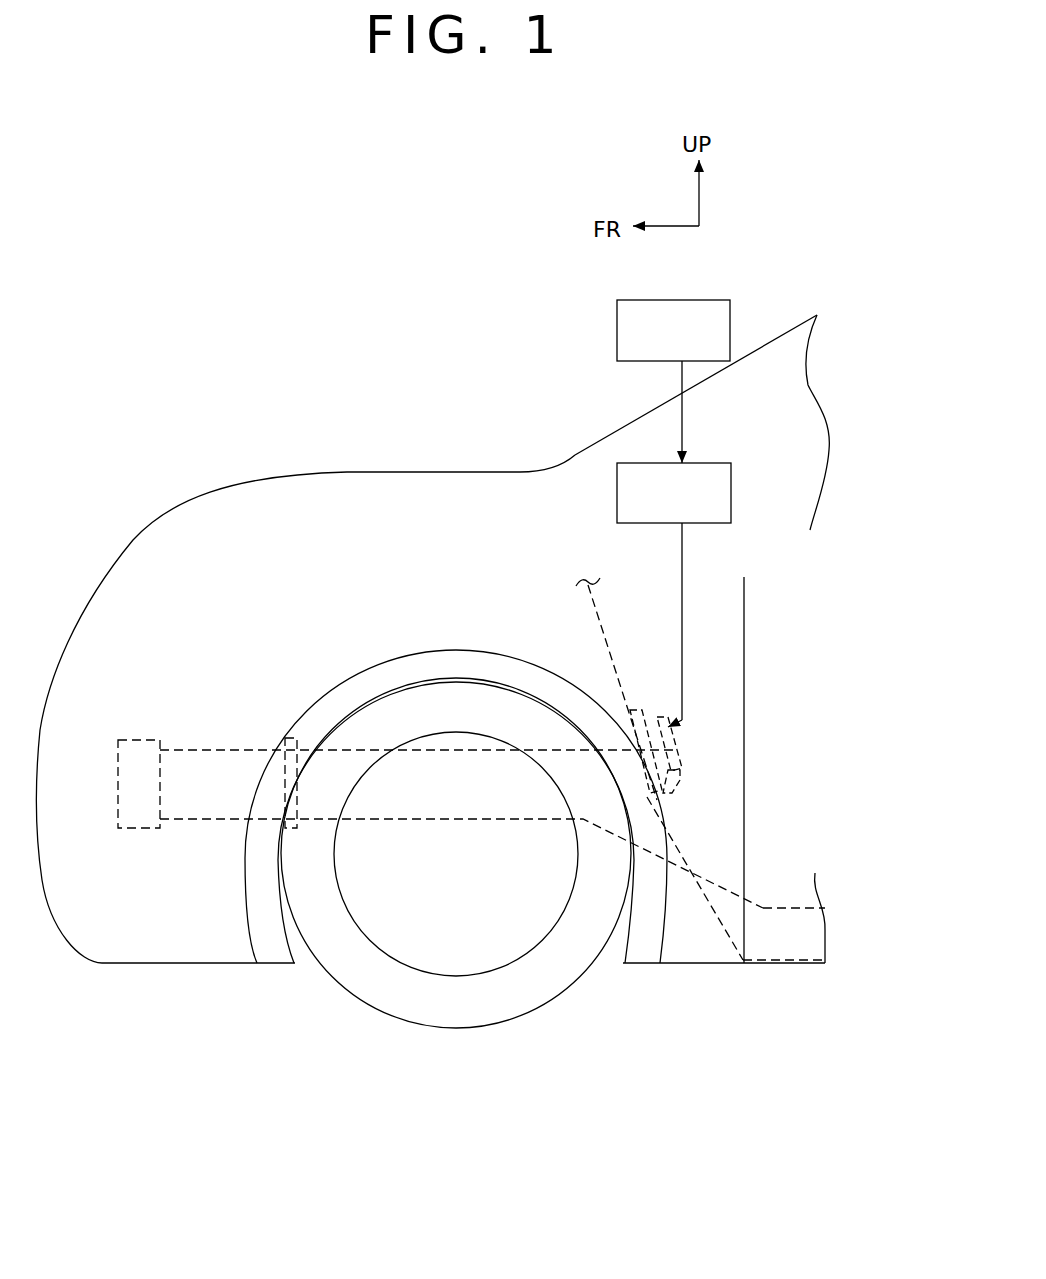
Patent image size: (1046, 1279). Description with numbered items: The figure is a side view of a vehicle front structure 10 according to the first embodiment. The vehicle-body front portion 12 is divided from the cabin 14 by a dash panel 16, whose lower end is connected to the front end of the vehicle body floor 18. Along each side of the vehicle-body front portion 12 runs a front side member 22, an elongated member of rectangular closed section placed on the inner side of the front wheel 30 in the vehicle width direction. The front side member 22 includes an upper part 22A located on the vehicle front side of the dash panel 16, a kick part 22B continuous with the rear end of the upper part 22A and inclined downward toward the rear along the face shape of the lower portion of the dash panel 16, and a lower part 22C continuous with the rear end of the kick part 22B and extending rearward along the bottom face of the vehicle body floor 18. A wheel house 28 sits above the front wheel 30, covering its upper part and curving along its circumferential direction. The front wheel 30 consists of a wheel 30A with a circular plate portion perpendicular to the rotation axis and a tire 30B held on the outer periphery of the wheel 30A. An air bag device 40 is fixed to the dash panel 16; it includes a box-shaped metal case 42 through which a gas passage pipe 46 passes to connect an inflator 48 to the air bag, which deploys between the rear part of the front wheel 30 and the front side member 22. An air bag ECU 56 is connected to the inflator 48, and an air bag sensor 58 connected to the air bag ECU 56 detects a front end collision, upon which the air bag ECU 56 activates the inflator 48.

The vehicle front structure 10 is at (474, 383).
The vehicle-body front portion 12 is at (364, 528).
The cabin 14 is at (777, 572).
The dash panel 16 is at (612, 635).
The vehicle body floor 18 is at (795, 900).
The front side member 22 is at (440, 752).
The upper part 22A is at (422, 750).
The kick part 22B is at (678, 993).
The lower part 22C is at (783, 960).
The wheel house 28 is at (338, 702).
The front wheel 30 is at (456, 896).
The wheel 30A is at (437, 958).
The tire 30B is at (480, 1010).
The air bag device 40 is at (712, 720).
The case 42 is at (633, 710).
The gas passage pipe 46 is at (668, 790).
The inflator 48 is at (673, 748).
The air bag ECU 56 is at (715, 463).
The air bag sensor 58 is at (706, 298).